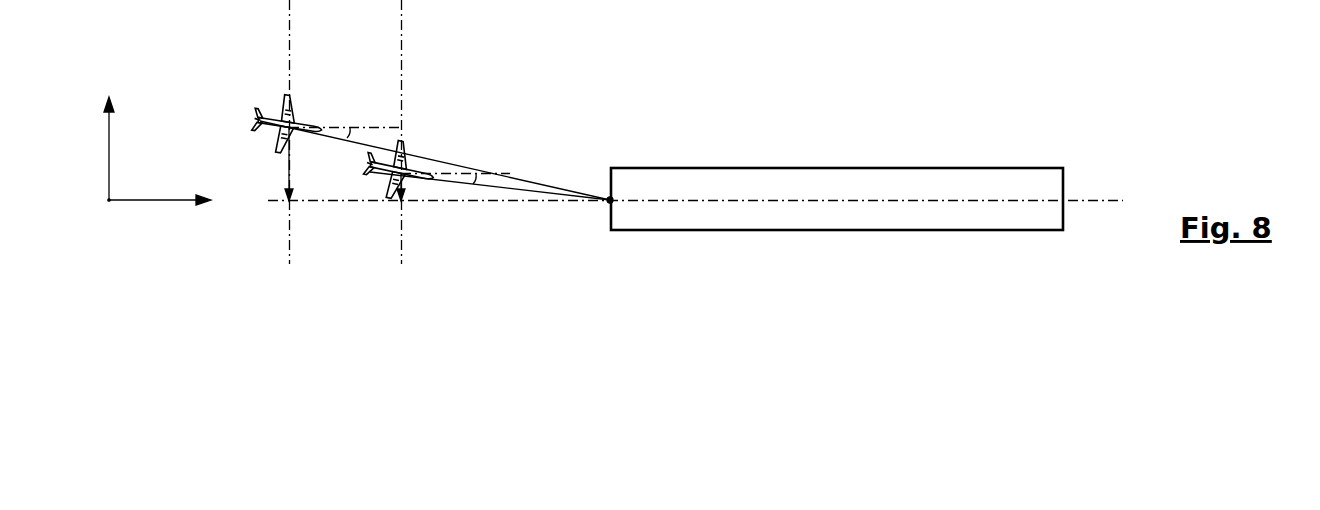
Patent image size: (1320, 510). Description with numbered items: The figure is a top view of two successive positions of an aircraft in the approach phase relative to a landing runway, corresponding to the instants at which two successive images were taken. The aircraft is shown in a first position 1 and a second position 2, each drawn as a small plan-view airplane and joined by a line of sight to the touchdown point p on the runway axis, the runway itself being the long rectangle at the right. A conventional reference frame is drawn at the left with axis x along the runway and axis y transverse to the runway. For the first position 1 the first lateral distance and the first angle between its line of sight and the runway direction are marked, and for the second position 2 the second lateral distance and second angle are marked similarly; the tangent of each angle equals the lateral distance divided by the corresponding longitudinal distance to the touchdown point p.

The first position of the aircraft 1 is at (423, 137).
The second position of the aircraft 2 is at (468, 158).
The touchdown point p is at (599, 212).
The axis Γ x is at (170, 196).
The axis Γ y is at (109, 129).